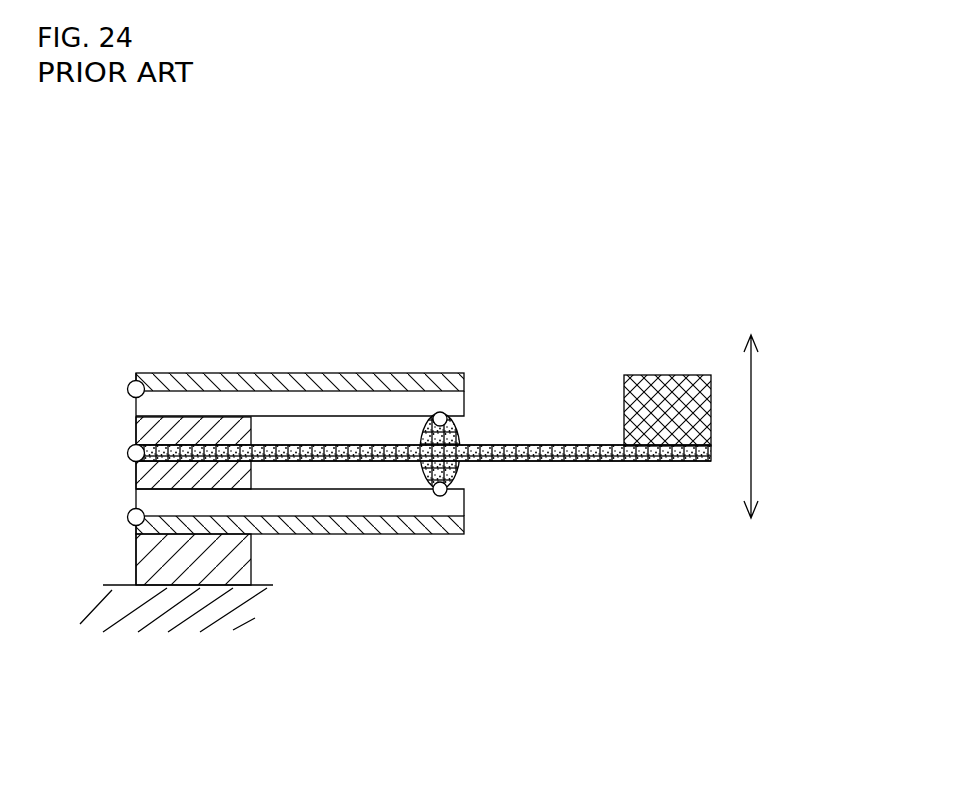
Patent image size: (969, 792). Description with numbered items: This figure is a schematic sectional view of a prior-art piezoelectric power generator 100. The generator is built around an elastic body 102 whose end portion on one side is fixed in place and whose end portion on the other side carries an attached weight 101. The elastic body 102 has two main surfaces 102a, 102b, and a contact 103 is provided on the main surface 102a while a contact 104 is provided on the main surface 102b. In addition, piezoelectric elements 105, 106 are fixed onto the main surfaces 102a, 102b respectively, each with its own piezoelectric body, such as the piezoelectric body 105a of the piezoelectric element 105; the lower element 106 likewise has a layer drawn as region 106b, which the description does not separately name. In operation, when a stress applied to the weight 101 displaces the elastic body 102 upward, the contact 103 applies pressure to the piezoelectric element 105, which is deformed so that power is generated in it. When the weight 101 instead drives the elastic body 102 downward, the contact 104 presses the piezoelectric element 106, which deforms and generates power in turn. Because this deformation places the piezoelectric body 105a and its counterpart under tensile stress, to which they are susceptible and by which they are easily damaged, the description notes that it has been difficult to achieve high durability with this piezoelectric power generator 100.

The piezoelectric power generator 100 is at (532, 243).
The weight 101 is at (711, 406).
The elastic body 102 is at (552, 472).
The main surface 102a is at (477, 446).
The main surface 102b is at (507, 463).
The contact 103 is at (460, 428).
The contact 104 is at (463, 480).
The piezoelectric element 105 is at (253, 367).
The piezoelectric body 105a is at (335, 405).
The piezoelectric element 106 is at (393, 547).
The lower electrode layer 106b is at (333, 510).